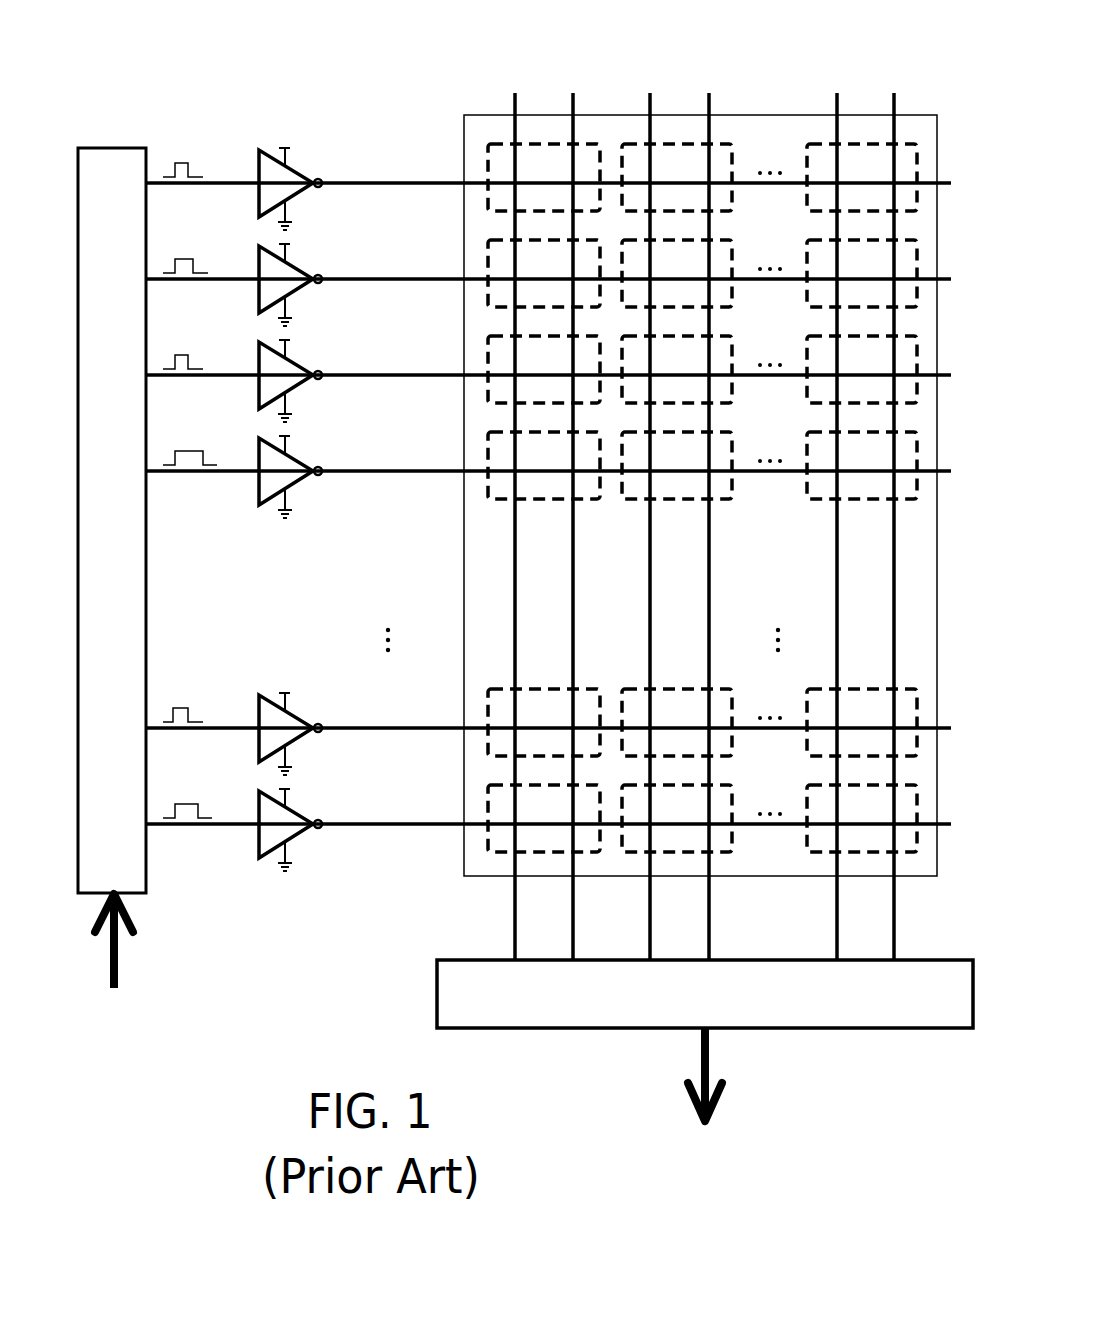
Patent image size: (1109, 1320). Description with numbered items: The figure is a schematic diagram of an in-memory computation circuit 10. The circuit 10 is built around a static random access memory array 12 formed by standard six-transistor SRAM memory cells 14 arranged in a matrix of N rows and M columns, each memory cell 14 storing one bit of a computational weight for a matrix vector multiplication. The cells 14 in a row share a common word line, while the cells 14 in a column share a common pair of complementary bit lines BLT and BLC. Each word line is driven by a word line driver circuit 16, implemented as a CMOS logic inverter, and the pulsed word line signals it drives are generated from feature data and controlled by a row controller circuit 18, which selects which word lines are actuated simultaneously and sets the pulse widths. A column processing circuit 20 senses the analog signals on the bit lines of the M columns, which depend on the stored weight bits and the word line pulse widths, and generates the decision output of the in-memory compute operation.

The in-memory computation circuit 10 is at (387, 108).
The static random access memory (SRAM) array 12 is at (462, 541).
The SRAM memory cell 14 is at (723, 143).
The word line driver circuit 16 is at (302, 191).
The row controller circuit 18 is at (113, 148).
The column processing circuit 20 is at (437, 993).